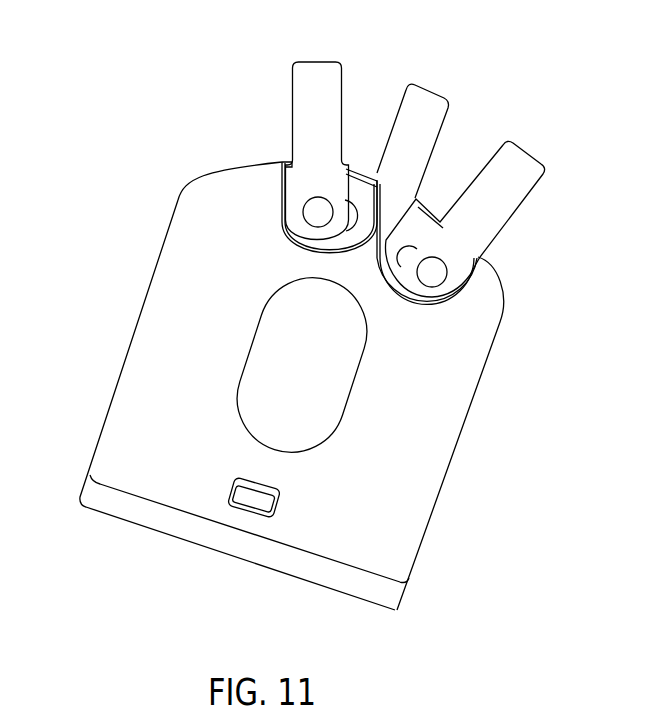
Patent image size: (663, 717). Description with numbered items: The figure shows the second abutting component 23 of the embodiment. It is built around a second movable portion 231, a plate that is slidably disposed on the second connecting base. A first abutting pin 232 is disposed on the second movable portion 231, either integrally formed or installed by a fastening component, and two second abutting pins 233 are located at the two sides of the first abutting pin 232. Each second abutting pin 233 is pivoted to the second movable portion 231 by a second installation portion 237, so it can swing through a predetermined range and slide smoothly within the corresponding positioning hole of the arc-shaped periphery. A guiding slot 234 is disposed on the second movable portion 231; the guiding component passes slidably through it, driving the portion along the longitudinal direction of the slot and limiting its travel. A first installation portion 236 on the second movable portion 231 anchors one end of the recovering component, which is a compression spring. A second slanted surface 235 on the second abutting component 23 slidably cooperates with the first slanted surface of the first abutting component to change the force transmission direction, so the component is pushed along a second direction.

The second abutting component 23 is at (80, 50).
The second movable portion 231 is at (377, 435).
The first abutting pin 232 is at (397, 158).
The second abutting pin 233 is at (320, 138).
The guiding slot 234 is at (290, 362).
The second slanted surface 235 is at (345, 585).
The first installation portion 236 is at (253, 502).
The second installation portion 237 is at (430, 273).